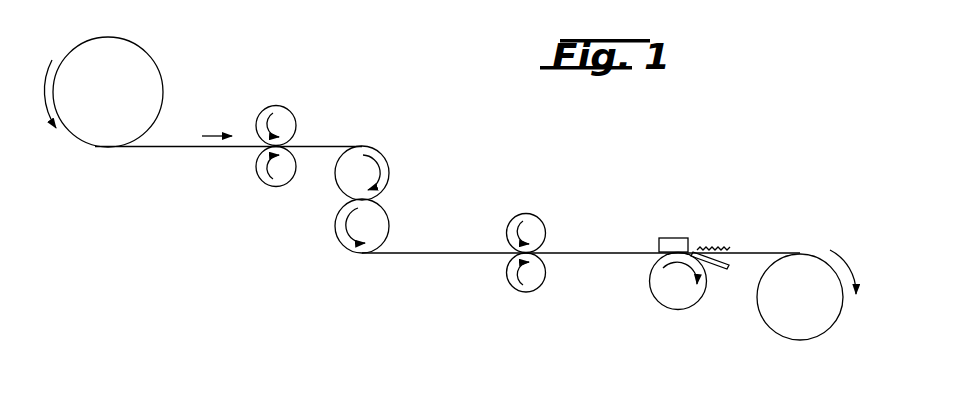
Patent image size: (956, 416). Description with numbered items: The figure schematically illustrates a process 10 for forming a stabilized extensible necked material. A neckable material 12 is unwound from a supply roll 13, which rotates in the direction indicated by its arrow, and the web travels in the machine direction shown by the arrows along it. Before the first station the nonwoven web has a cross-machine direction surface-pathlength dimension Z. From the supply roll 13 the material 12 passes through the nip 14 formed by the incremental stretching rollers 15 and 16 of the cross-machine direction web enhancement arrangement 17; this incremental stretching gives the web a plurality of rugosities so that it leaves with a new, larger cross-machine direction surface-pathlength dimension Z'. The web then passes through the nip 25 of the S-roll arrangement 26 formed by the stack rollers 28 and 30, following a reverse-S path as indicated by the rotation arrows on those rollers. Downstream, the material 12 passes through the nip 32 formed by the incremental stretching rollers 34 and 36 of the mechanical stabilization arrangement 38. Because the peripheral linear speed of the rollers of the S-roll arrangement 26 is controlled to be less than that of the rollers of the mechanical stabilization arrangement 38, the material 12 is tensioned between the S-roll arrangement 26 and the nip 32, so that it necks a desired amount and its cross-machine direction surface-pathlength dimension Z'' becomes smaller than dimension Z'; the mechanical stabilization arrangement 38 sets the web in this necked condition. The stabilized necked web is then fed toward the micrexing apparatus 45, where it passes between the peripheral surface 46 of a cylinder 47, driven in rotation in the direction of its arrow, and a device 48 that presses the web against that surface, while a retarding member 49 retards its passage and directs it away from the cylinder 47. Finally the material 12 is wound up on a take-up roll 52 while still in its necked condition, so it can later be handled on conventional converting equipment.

The process for forming a stabilized extensible necked material 10 is at (381, 116).
The neckable material 12 is at (167, 147).
The supply roll 13 is at (152, 58).
The nip 14 is at (258, 150).
The incremental stretching roller 15 is at (289, 106).
The incremental stretching roller 16 is at (277, 187).
The cross-machine direction web enhancement arrangement 17 is at (251, 100).
The nip 25 is at (390, 198).
The S-roll arrangement 26 is at (326, 218).
The stack roller 28 is at (383, 150).
The stack roller 30 is at (389, 233).
The nip 32 is at (500, 257).
The incremental stretching roller 34 is at (540, 218).
The incremental stretching roller 36 is at (525, 292).
The mechanical stabilization arrangement 38 is at (564, 235).
The apparatus 45 is at (705, 231).
The peripheral surface 46 is at (701, 300).
The cylinder 47 is at (664, 292).
The device 48 is at (671, 237).
The retarding member 49 is at (718, 267).
The take-up roll 52 is at (819, 338).
The CD surface-pathlength dimension Z is at (190, 114).
The CD surface-pathlength dimension Z' is at (336, 113).
The CD surface-pathlength dimension Z'' is at (485, 219).